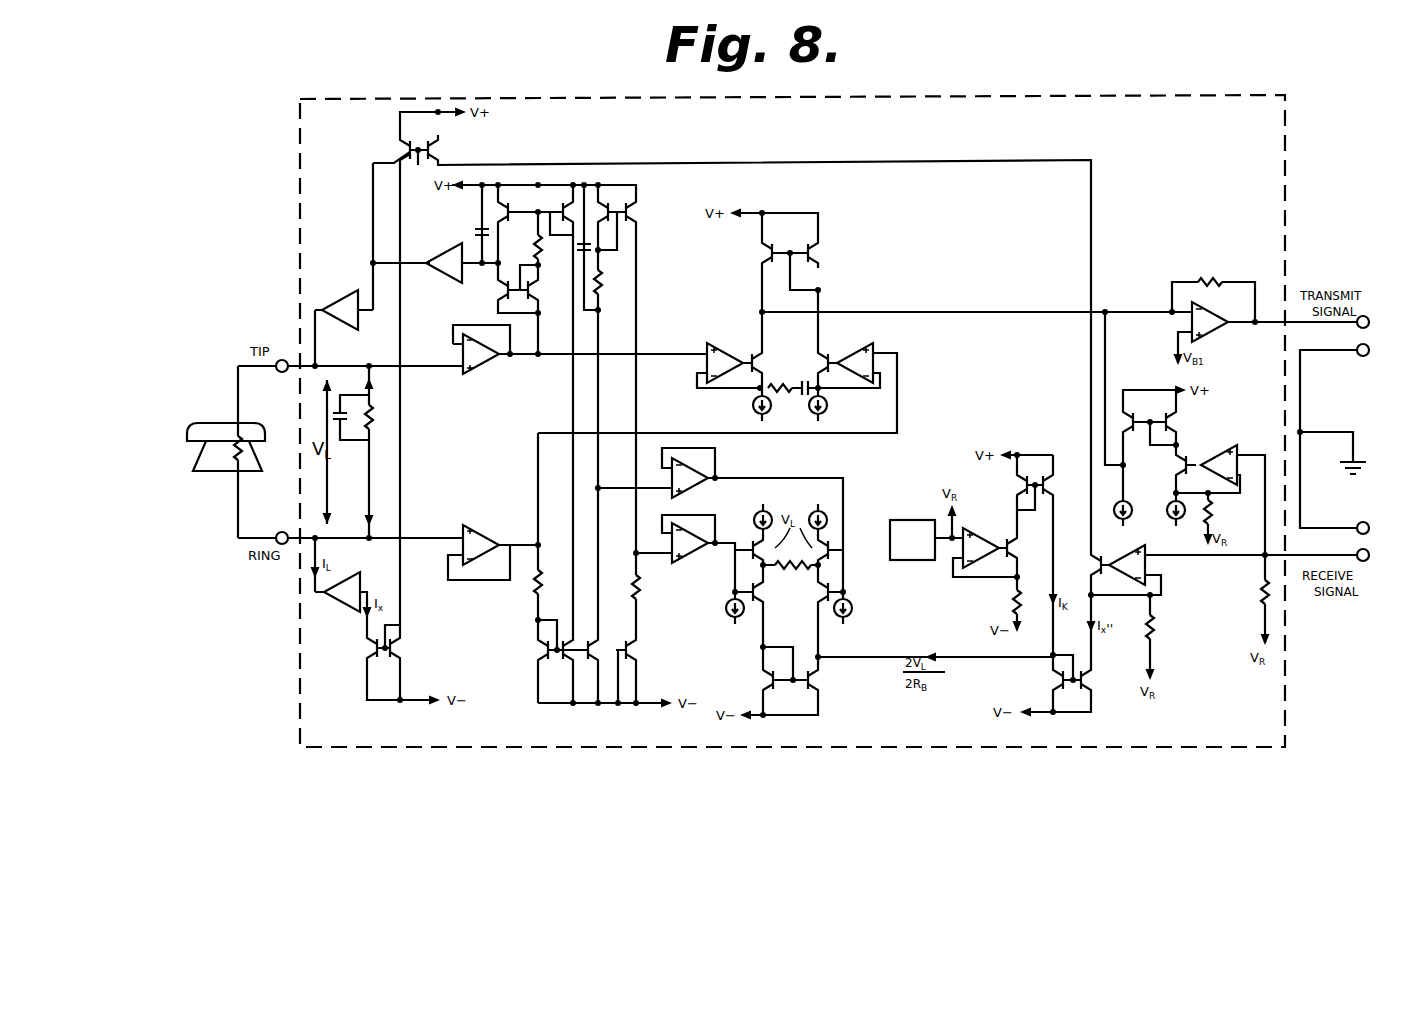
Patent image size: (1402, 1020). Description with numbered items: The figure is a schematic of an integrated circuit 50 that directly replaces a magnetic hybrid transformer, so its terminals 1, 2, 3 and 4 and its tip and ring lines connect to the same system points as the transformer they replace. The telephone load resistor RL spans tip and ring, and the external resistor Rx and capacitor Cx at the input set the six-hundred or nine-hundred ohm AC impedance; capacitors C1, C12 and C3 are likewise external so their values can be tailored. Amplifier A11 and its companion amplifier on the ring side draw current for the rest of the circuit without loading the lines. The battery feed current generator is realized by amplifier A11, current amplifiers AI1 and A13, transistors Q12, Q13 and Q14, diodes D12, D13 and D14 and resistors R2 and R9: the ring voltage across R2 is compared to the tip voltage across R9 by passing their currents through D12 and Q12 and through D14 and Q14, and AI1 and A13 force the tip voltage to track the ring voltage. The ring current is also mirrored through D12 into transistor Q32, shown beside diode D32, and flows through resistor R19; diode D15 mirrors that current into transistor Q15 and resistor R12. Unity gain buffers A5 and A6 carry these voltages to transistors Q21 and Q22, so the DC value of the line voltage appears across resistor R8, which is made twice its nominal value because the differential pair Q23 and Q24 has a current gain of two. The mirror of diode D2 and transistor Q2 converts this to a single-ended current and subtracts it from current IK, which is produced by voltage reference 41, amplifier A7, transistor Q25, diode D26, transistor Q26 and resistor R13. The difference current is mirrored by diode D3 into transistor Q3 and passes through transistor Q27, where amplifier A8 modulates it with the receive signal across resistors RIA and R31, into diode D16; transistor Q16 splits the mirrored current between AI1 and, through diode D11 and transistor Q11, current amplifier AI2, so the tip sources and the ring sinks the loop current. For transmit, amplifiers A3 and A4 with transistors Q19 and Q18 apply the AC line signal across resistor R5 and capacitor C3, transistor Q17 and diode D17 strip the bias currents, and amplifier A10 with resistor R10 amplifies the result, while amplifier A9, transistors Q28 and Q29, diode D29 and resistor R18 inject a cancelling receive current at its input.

The integrated circuit 50 is at (356, 90).
The voltage reference block 41 is at (900, 520).
The terminal 1 is at (1369, 321).
The terminal 2 is at (1369, 348).
The terminal 3 is at (1369, 525).
The terminal 4 is at (1369, 552).
The transistor Q16 is at (396, 150).
The diode D16 is at (442, 150).
The current amplifier A13 is at (444, 263).
The capacitor C1 is at (474, 226).
The transistor Q14 is at (511, 208).
The diode D14 is at (559, 207).
The diode D15 is at (610, 207).
The transistor Q15 is at (636, 212).
The resistor R9 is at (527, 247).
The capacitor C12 is at (583, 256).
The resistor R19 is at (611, 282).
The transistor Q13 is at (499, 290).
The diode D13 is at (541, 290).
The current amplifier AI1 is at (340, 310).
The amplifier A11 is at (481, 354).
The capacitor Cx is at (344, 409).
The resistor Rx is at (379, 417).
The resistor RL is at (226, 447).
The current amplifier AI2 is at (342, 592).
The transistor Q11 is at (363, 648).
The diode D11 is at (404, 648).
The resistor R2 is at (548, 582).
The diode D12 is at (535, 650).
The transistor Q12 is at (566, 657).
The transistor Q32 is at (596, 647).
The diode D32 is at (640, 650).
The resistor R12 is at (650, 587).
The operational amplifier A5 is at (690, 478).
The operational amplifier A6 is at (690, 543).
The transistor Q22 is at (741, 536).
The transistor Q21 is at (839, 536).
The transistor Q24 is at (754, 600).
The transistor Q23 is at (824, 600).
The resistor R8 is at (790, 573).
The diode D2 is at (764, 680).
The transistor Q2 is at (817, 680).
The transistor Q17 is at (757, 253).
The diode D17 is at (822, 253).
The transistor Q19 is at (752, 378).
The transistor Q18 is at (828, 378).
The amplifier A3 is at (725, 363).
The amplifier A4 is at (855, 363).
The resistor R5 is at (780, 381).
The capacitor C3 is at (802, 381).
The operational amplifier A7 is at (981, 548).
The transistor Q25 is at (1021, 548).
The diode D26 is at (1013, 485).
The transistor Q26 is at (1057, 485).
The resistor R13 is at (1003, 602).
The diode D3 is at (1051, 680).
The transistor Q3 is at (1091, 680).
The transistor Q27 is at (1090, 565).
The operational amplifier A8 is at (1127, 565).
The resistor RIA is at (1162, 627).
The resistor R31 is at (1248, 592).
The transistor Q28 is at (1175, 488).
The amplifier A9 is at (1219, 465).
The resistor R18 is at (1222, 512).
The transistor Q29 is at (1124, 466).
The diode D29 is at (1180, 422).
The operational amplifier A10 is at (1210, 322).
The resistor R10 is at (1211, 273).